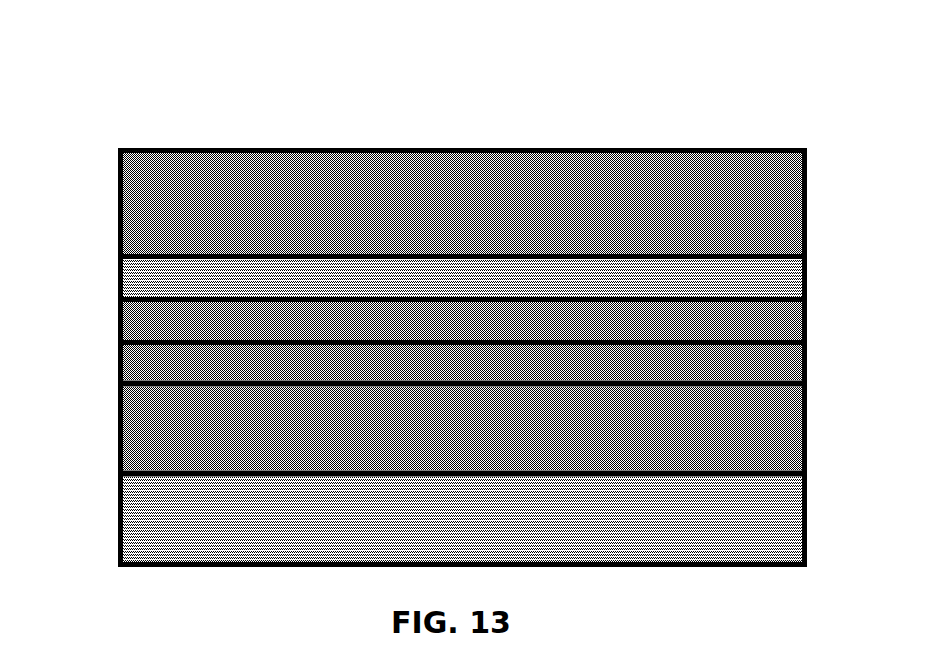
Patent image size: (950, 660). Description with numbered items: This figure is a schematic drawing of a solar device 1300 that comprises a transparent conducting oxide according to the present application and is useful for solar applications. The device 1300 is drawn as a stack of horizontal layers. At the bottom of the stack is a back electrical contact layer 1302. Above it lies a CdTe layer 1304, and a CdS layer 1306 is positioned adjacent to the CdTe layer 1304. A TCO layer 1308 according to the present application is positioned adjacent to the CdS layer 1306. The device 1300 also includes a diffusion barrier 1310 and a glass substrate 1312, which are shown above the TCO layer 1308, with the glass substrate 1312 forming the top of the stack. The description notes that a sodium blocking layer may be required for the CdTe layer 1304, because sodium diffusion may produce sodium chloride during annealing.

The device 1300 is at (614, 110).
The back electrical contact layer 1302 is at (183, 540).
The CdTe layer 1304 is at (788, 429).
The CdS layer 1306 is at (160, 363).
The TCO layer 1308 is at (745, 319).
The diffusion barrier 1310 is at (180, 279).
The glass substrate 1312 is at (191, 200).